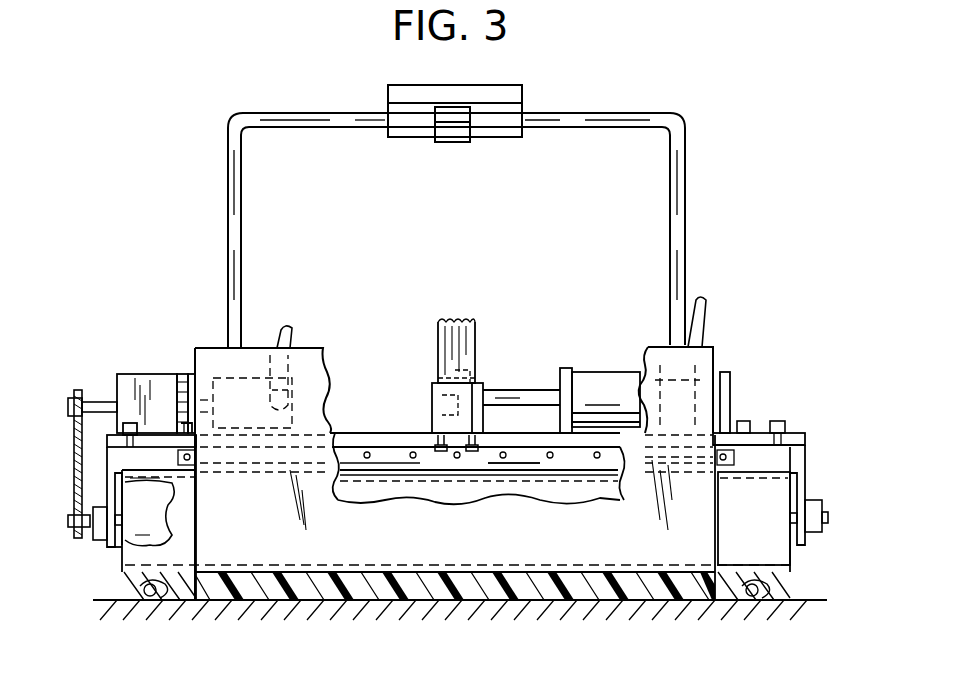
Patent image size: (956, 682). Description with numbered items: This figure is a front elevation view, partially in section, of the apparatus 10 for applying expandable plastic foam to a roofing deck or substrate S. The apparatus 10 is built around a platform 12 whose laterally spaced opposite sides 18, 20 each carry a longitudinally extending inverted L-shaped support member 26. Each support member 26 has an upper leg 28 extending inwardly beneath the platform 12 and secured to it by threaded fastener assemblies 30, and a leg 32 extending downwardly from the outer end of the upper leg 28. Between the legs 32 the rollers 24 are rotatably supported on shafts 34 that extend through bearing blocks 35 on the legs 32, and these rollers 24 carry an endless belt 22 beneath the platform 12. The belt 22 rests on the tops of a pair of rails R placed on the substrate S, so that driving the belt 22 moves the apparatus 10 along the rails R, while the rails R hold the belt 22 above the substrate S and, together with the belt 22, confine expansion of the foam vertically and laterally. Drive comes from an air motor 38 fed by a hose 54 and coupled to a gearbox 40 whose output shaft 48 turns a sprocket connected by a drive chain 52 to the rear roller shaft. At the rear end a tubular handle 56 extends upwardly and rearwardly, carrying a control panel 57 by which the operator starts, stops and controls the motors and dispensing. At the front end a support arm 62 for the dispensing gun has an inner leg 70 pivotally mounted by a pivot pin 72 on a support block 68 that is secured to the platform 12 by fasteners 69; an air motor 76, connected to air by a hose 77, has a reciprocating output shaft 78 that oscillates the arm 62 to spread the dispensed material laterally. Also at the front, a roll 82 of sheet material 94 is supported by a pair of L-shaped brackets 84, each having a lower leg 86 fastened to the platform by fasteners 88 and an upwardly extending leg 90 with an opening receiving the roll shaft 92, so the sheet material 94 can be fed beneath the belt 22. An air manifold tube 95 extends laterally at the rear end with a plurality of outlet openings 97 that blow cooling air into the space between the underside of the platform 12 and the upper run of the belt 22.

The apparatus 10 is at (752, 137).
The platform 12 is at (371, 425).
The side 18 is at (792, 432).
The side 20 is at (116, 436).
The endless belt 22 is at (113, 566).
The roller 24 is at (150, 503).
The inverted L-shaped support member 26 is at (96, 462).
The upper leg 28 is at (148, 450).
The threaded fastener assembly 30 is at (129, 434).
The leg 32 is at (108, 548).
The shaft 34 is at (123, 522).
The bearing block 35 is at (100, 508).
The motor 38 is at (300, 385).
The gearbox 40 is at (126, 385).
The output shaft 48 is at (95, 405).
The drive chain 52 is at (78, 440).
The hose 54 is at (291, 329).
The tubular handle 56 is at (334, 113).
The control panel 57 is at (516, 90).
The support arm 62 is at (478, 316).
The support block 68 is at (440, 410).
The fasteners 69 is at (472, 452).
The inner leg 70 is at (437, 376).
The pivot pin 72 is at (476, 362).
The air motor 76 is at (622, 378).
The hose 77 is at (703, 328).
The reciprocating output shaft 78 is at (538, 393).
The roll 82 is at (255, 355).
The L-shaped bracket 84 is at (184, 368).
The lower leg 86 is at (745, 447).
The fastener 88 is at (744, 421).
The upwardly extending leg 90 is at (722, 408).
The roll shaft 92 is at (730, 378).
The sheet material 94 is at (613, 525).
The air manifold tube 95 is at (527, 460).
The outlet openings 97 is at (552, 459).
The rail R is at (150, 585).
The substrate S is at (800, 598).